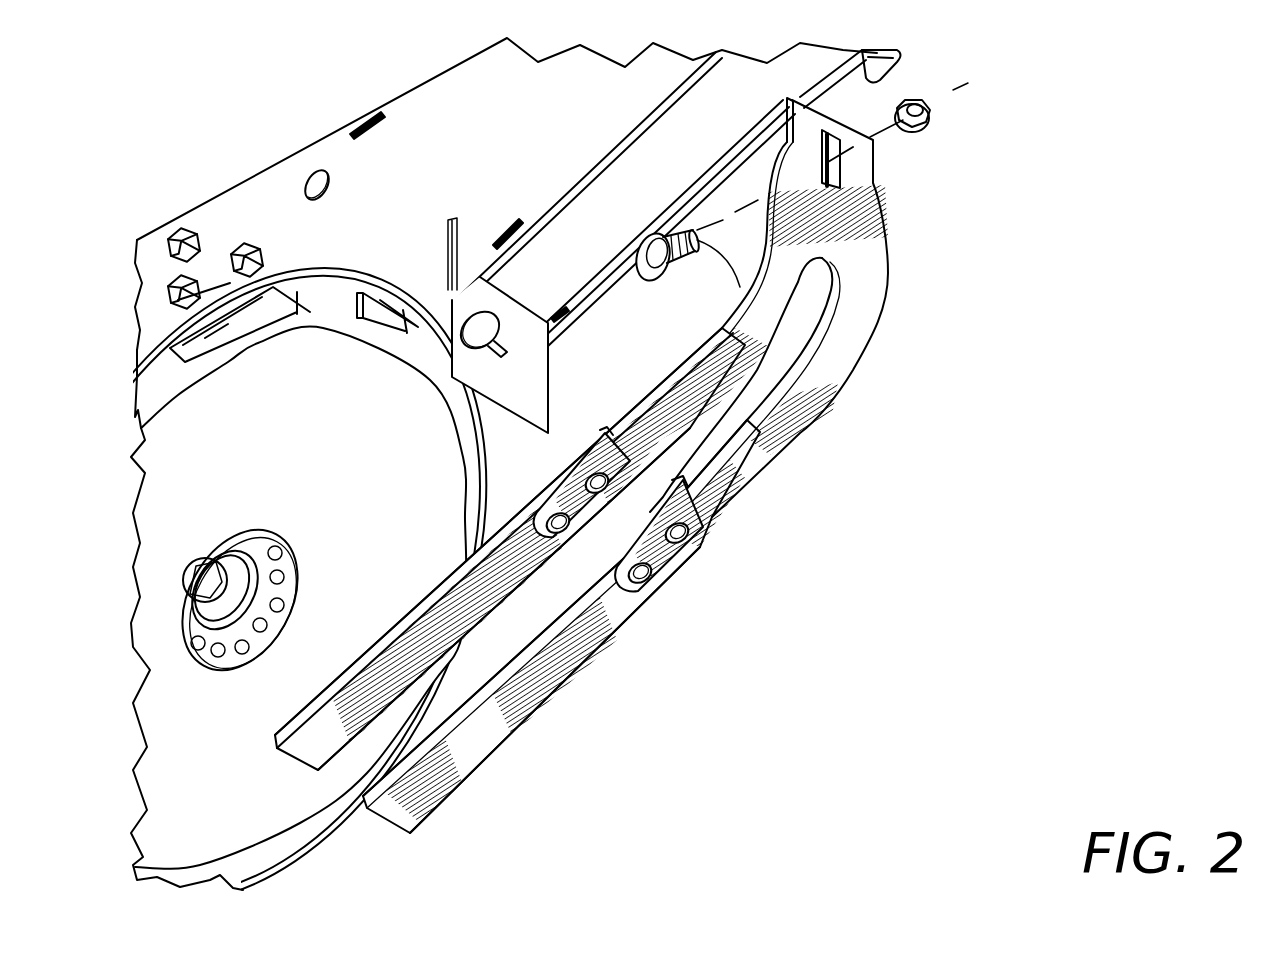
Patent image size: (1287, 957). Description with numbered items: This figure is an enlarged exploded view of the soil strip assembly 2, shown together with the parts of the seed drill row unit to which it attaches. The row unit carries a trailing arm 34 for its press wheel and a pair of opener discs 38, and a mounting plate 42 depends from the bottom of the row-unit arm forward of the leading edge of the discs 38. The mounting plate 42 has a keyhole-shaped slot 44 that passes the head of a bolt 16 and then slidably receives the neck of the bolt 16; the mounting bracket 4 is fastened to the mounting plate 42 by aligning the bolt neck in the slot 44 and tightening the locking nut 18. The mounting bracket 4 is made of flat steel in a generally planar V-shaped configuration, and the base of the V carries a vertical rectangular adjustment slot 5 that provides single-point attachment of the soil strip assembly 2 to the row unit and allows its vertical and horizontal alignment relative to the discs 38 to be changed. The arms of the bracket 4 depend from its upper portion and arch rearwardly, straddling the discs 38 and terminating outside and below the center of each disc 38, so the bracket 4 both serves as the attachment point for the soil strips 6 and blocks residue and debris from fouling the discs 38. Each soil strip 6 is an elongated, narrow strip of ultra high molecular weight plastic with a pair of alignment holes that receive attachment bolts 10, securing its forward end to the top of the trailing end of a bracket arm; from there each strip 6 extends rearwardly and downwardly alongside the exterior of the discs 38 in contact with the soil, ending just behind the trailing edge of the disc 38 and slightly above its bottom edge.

The soil strip assembly 2 is at (922, 437).
The mounting bracket 4 is at (794, 307).
The adjustment slot 5 is at (843, 157).
The soil strips 6 is at (407, 611).
The attachment bolts 10 is at (598, 519).
The bolt 16 is at (663, 275).
The locking nut 18 is at (925, 125).
The trailing arm 34 is at (533, 161).
The opener discs 38 is at (385, 484).
The mounting plate 42 is at (532, 325).
The keyhole-shaped slot 44 is at (508, 352).